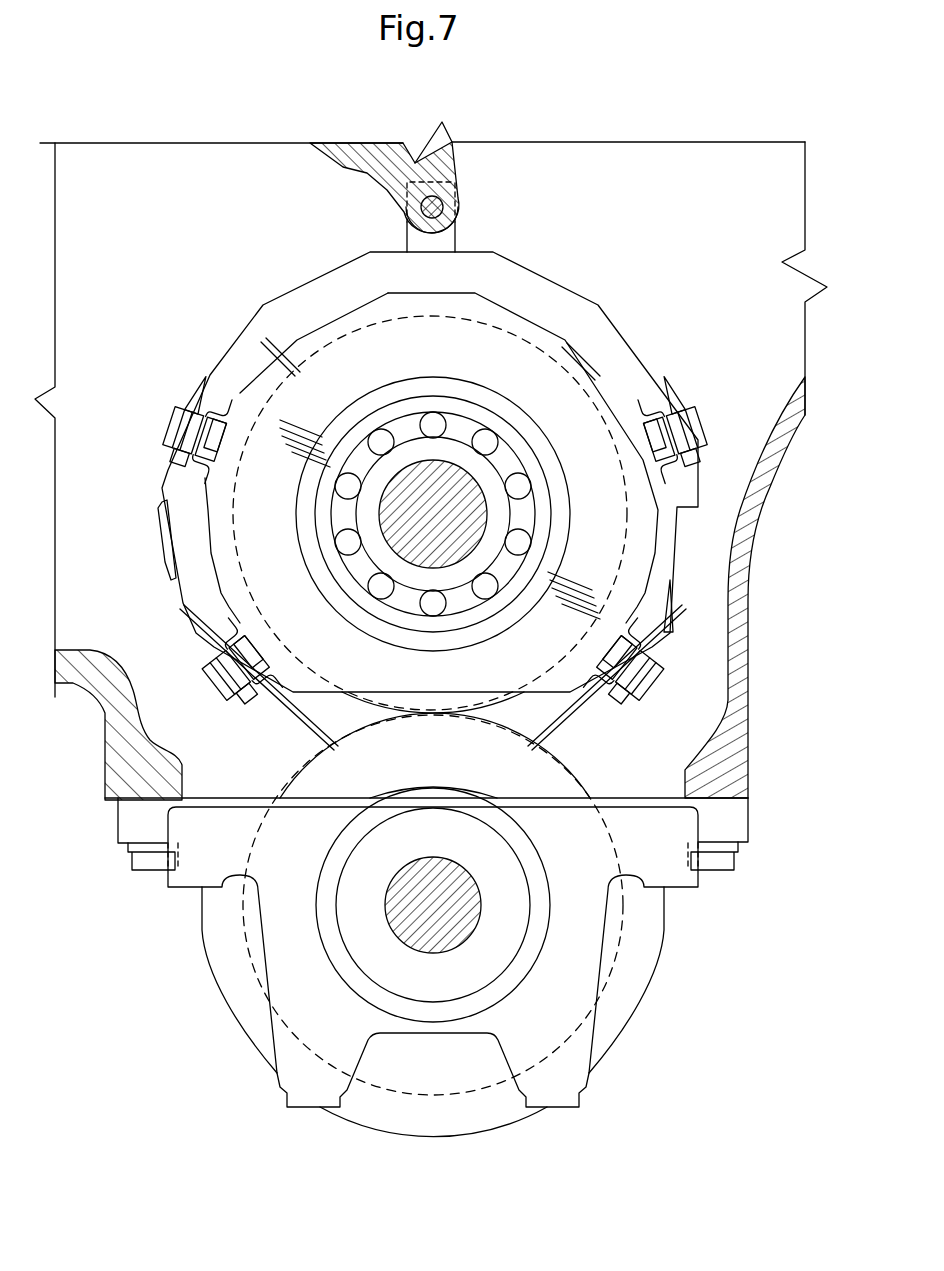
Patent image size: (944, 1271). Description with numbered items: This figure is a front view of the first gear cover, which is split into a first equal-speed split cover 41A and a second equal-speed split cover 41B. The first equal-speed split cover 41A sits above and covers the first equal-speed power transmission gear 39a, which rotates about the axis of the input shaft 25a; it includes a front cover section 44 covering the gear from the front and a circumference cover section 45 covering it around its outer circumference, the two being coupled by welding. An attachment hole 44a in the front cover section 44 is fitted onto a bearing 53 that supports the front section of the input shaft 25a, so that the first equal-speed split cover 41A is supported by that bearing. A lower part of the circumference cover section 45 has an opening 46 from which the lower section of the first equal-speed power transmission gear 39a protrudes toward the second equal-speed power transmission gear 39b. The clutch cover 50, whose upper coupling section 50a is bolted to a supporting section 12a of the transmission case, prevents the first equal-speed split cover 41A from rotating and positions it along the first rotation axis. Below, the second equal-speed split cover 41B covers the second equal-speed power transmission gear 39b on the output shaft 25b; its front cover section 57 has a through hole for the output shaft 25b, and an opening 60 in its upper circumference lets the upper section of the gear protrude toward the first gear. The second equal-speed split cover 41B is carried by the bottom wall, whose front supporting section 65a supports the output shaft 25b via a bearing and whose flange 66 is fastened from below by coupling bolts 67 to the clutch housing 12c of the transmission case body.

The supporting section 12a is at (410, 178).
The clutch housing 12c is at (57, 812).
The input shaft 25a is at (423, 473).
The output shaft 25b is at (397, 915).
The first equal-speed power transmission gear 39a is at (297, 330).
The second equal-speed power transmission gear 39b is at (618, 937).
The first equal-speed split cover 41A is at (434, 477).
The second equal-speed split cover 41B is at (447, 1011).
The front cover section 44 is at (515, 347).
The attachment hole 44a is at (535, 455).
The circumference cover section 45 is at (350, 304).
The opening 46 is at (324, 707).
The clutch cover 50 is at (505, 257).
The coupling section 50a is at (413, 238).
The bearing 53 is at (323, 488).
The front cover section 57 is at (628, 985).
The opening 60 is at (563, 793).
The front supporting section 65a is at (528, 956).
The flange 66 is at (740, 822).
The coupling bolts 67 is at (142, 862).